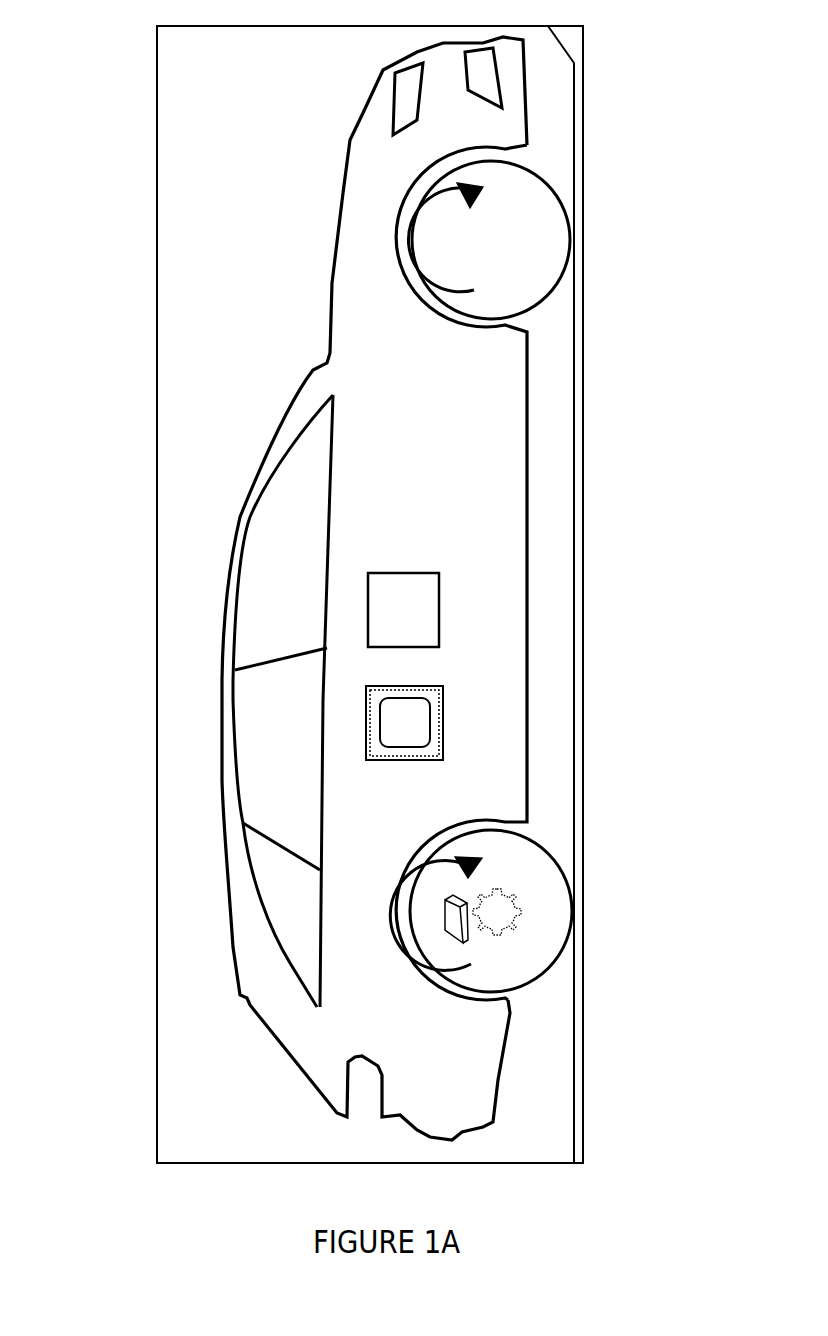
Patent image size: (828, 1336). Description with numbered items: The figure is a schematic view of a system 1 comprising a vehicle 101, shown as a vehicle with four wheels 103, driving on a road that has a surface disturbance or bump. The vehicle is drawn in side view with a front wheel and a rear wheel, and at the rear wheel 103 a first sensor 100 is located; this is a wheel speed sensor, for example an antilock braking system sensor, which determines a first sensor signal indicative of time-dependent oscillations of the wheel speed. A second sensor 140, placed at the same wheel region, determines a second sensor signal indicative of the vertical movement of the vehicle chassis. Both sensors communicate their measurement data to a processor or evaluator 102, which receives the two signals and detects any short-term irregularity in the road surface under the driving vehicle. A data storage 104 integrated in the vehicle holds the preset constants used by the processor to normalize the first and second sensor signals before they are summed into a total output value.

The system 1 is at (183, 266).
The vehicle 101 is at (423, 488).
The data storage 104 is at (440, 612).
The processor or evaluator 102 is at (445, 722).
The second sensor 140 is at (470, 858).
The first sensor 100 is at (525, 912).
The wheel 103 is at (523, 973).